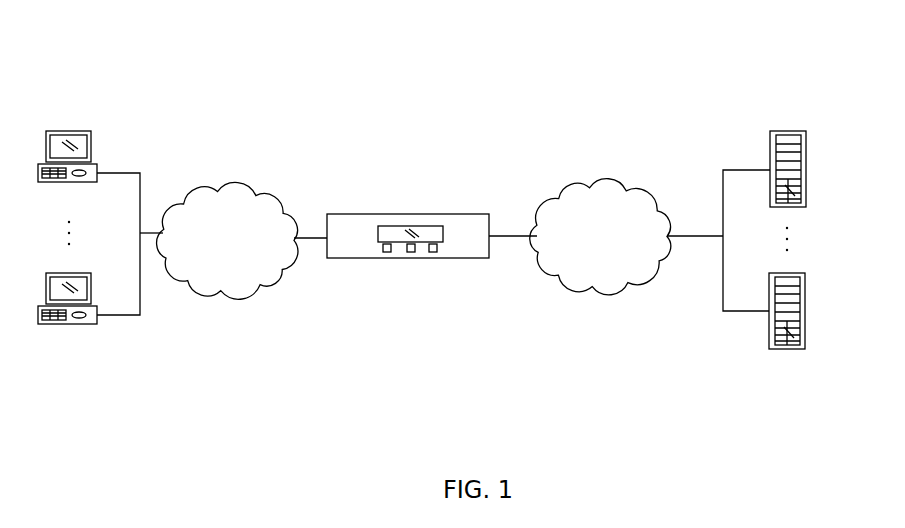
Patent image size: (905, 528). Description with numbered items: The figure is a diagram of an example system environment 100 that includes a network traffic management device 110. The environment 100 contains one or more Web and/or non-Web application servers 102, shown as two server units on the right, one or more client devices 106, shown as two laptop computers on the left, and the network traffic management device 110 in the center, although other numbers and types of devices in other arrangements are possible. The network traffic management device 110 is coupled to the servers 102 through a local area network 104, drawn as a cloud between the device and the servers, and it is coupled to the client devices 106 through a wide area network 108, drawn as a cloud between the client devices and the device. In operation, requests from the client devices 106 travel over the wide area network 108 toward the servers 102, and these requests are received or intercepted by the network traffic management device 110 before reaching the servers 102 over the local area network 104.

The system environment 100 is at (762, 48).
The application servers 102 is at (768, 134).
The local area network 104 is at (600, 237).
The client devices 106 is at (98, 166).
The wide area network 108 is at (227, 240).
The network traffic management device 110 is at (413, 214).